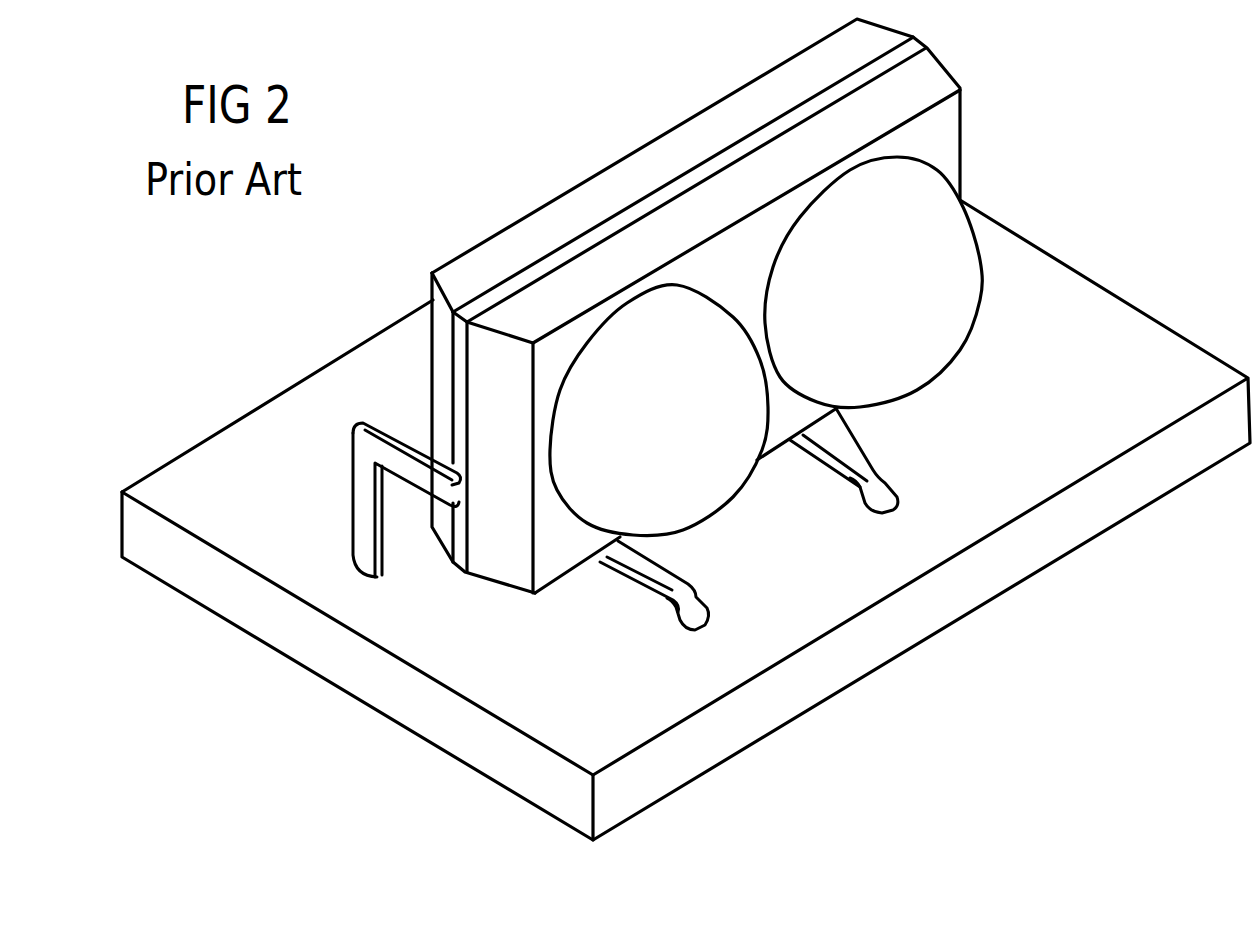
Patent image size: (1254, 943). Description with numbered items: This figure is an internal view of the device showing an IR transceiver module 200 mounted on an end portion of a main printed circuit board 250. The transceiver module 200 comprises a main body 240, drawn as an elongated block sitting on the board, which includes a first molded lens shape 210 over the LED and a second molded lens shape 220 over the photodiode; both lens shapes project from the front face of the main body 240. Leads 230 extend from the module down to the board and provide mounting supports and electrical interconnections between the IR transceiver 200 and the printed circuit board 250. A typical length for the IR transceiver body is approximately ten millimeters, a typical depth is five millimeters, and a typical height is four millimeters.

The IR transceiver module 200 is at (960, 61).
The first molded lens shape 210 is at (937, 252).
The second molded lens shape 220 is at (658, 338).
The leads 230 is at (360, 512).
The main body 240 is at (640, 149).
The main printed circuit board 250 is at (353, 700).